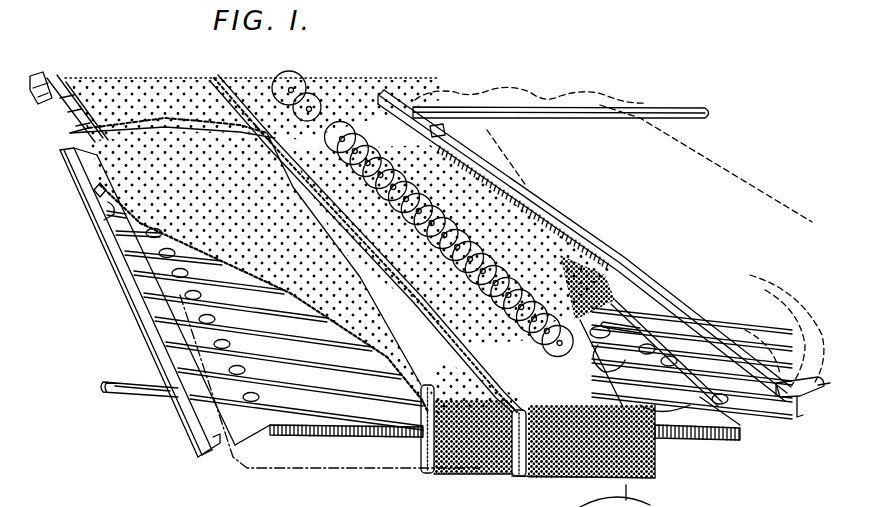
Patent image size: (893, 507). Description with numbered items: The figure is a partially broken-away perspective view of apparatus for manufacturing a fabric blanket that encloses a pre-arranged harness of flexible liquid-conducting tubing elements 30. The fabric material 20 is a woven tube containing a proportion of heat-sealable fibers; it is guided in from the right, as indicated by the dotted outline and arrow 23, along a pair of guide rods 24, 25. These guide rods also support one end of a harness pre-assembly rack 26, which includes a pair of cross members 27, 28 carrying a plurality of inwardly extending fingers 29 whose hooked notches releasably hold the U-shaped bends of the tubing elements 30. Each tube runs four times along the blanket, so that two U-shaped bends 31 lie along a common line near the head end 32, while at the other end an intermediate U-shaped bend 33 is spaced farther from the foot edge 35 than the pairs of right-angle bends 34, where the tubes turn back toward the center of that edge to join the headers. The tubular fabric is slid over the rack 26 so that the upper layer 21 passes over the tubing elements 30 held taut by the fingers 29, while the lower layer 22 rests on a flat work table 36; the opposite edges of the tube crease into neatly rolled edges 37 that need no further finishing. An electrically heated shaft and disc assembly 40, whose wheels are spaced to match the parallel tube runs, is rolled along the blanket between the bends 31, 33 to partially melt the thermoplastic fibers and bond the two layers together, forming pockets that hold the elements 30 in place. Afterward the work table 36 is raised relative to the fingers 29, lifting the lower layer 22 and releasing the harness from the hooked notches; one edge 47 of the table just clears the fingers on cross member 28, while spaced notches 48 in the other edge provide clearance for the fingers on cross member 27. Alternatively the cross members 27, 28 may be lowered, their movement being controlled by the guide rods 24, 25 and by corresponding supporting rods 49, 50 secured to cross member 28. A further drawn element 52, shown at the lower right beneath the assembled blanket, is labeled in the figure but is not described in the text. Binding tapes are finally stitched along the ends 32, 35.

The fabric material 20 is at (145, 95).
The upper layer 21 is at (413, 390).
The lower layer 22 is at (385, 392).
The arrow 23 is at (490, 78).
The guide rod 24 is at (693, 108).
The guide rod 25 is at (797, 402).
The harness pre-assembly rack 26 is at (275, 455).
The cross member 27 is at (655, 306).
The cross member 28 is at (125, 276).
The fingers 29 is at (100, 222).
The flexible liquid-conducting tubing elements 30 is at (214, 292).
The U-shaped bends 31 is at (165, 248).
The head end 32 is at (147, 302).
The U-shaped bend 33 is at (604, 320).
The right-angle bends 34 is at (670, 358).
The foot edge 35 is at (566, 251).
The work table 36 is at (345, 436).
The rolled edges 37 is at (527, 476).
The electrically heated shaft and disc assembly 40 is at (312, 88).
The edge of the table 47 is at (262, 430).
The spaced notches 48 is at (604, 352).
The rod 49 is at (45, 80).
The rod 50 is at (143, 396).
The drum 52 is at (626, 492).